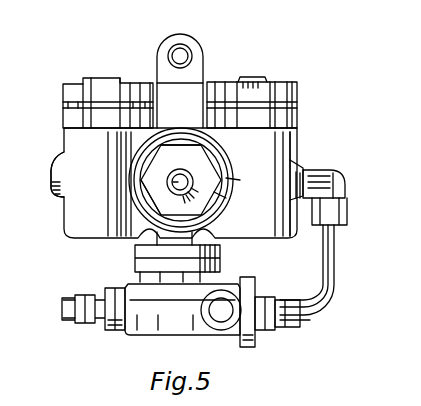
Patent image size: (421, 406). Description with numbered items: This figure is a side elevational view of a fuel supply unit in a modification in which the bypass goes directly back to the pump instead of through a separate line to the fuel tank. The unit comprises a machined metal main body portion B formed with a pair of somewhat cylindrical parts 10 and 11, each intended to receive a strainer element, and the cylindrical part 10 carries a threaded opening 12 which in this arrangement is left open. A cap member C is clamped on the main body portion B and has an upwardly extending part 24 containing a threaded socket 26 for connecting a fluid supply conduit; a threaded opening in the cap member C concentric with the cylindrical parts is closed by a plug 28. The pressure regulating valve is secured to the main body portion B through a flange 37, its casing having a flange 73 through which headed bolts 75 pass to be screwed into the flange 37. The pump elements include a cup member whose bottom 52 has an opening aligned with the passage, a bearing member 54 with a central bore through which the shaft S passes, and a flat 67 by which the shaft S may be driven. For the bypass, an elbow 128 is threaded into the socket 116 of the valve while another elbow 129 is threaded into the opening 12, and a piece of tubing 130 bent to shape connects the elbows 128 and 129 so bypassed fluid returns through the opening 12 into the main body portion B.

The cylindrically shaped part 10 is at (68, 222).
The main body portion B is at (56, 147).
The cap member C is at (56, 96).
The upwardly extending part 24 is at (158, 62).
The threaded socket 26 is at (178, 44).
The plug 28 is at (258, 76).
The bottom 52 is at (203, 182).
The flat 67 is at (181, 169).
The shaft S is at (170, 185).
The bearing member 54 is at (162, 186).
The cylindrically shaped part 11 is at (290, 158).
The threaded opening 12 is at (300, 171).
The elbow 129 is at (337, 186).
The tubing 130 is at (335, 258).
The flange 73 is at (144, 263).
The flange 37 is at (207, 254).
The headed bolt 75 is at (138, 283).
The socket 116 is at (206, 310).
The elbow 128 is at (224, 322).